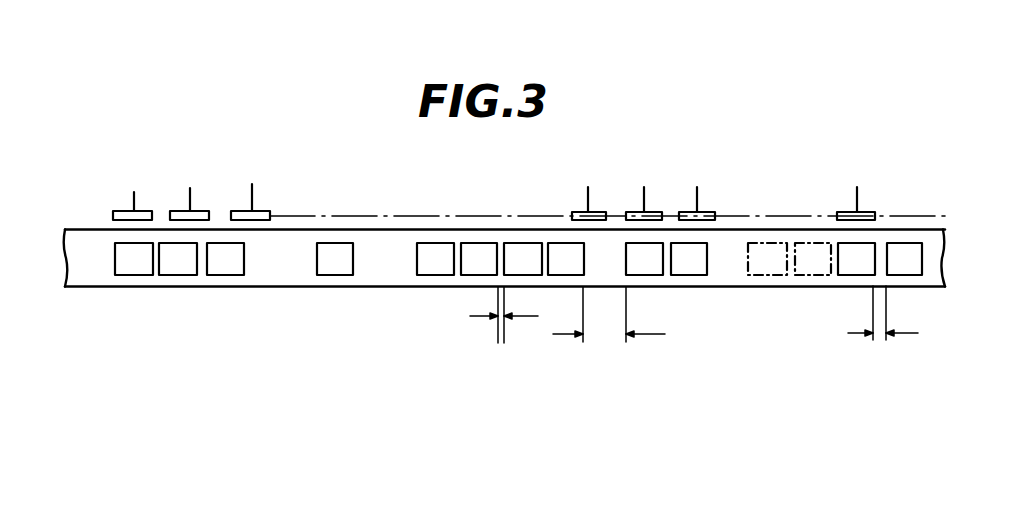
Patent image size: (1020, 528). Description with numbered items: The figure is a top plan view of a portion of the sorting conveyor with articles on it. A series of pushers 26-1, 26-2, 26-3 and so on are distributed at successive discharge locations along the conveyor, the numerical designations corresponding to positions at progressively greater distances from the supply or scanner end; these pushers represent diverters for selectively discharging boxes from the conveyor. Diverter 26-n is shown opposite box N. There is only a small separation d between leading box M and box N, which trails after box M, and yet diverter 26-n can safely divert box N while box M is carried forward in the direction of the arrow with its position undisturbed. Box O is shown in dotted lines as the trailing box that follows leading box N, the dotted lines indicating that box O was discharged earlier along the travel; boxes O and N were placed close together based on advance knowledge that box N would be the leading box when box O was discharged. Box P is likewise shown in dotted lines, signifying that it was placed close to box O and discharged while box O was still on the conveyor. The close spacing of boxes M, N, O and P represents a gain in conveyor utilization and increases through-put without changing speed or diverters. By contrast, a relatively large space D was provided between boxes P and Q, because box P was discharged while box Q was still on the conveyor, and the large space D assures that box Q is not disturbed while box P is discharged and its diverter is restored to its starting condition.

The pusher 26-1 is at (133, 192).
The pusher 26-2 is at (190, 188).
The pusher 26-3 is at (252, 191).
The diverter 26-n is at (857, 198).
The box Q is at (697, 276).
The box P is at (765, 276).
The box O is at (807, 276).
The box N is at (862, 276).
The box M is at (907, 276).
The small separation d is at (497, 322).
The large separation D is at (609, 318).